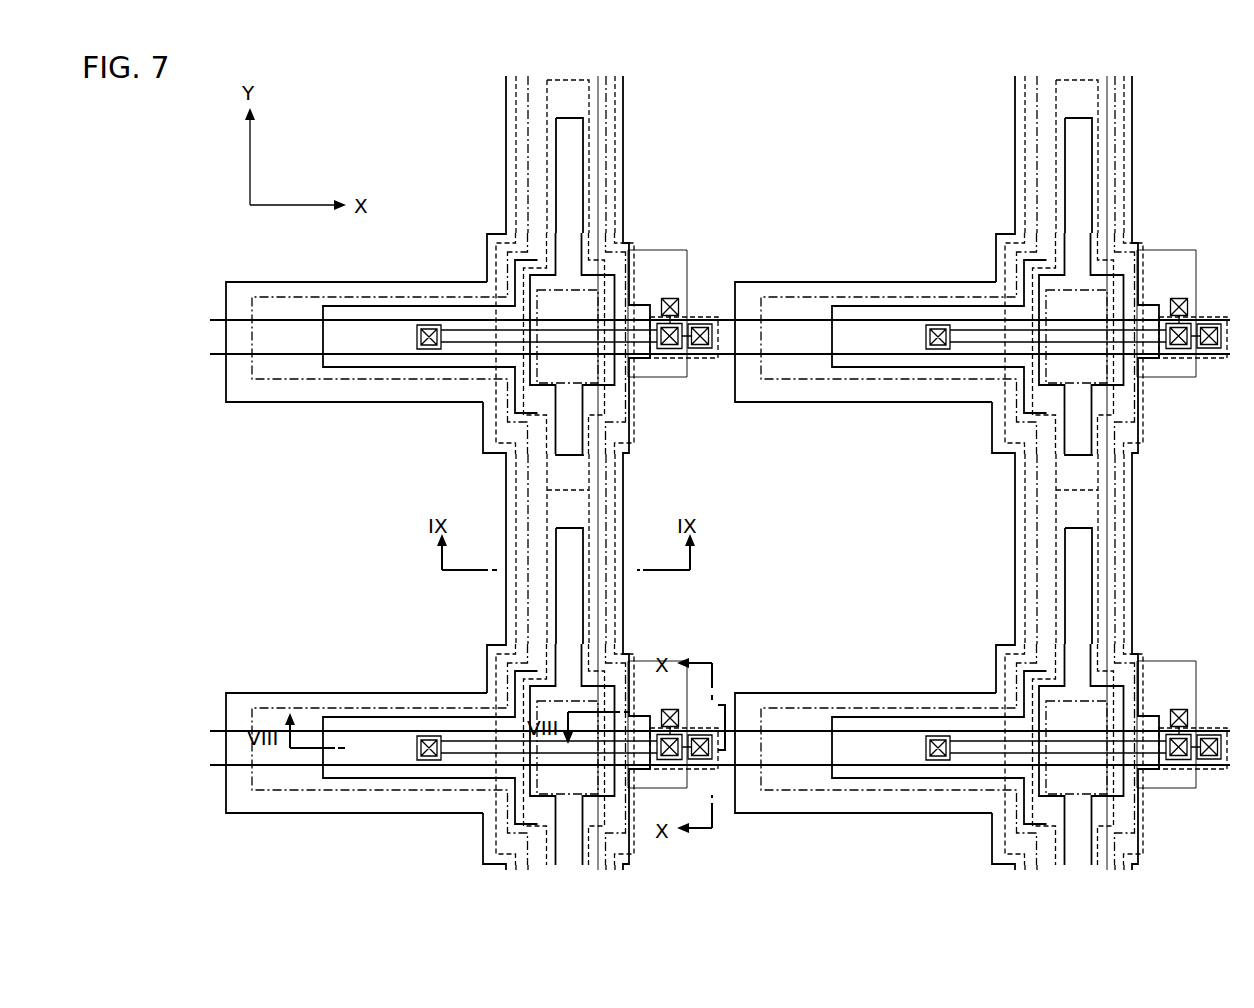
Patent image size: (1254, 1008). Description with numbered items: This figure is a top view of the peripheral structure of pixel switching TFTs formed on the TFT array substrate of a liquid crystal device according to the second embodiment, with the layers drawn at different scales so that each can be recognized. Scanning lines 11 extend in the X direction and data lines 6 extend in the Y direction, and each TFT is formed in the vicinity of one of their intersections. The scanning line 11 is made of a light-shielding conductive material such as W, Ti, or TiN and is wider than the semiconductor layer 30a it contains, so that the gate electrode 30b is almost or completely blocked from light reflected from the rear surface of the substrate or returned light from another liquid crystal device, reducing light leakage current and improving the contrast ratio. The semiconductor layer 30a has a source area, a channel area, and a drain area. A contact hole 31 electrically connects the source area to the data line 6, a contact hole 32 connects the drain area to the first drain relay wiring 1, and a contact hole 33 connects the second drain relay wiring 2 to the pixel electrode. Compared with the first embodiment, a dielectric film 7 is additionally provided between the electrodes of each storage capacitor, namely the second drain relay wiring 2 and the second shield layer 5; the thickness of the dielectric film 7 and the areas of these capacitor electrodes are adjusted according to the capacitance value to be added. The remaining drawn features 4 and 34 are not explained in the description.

The first drain relay wiring 1 is at (710, 316).
The second drain relay wiring 2 is at (589, 152).
The data line 4 is at (302, 282).
The second shield layer 5 is at (506, 126).
The data line 6 is at (598, 110).
The dielectric film 7 is at (516, 170).
The scanning line 11 is at (285, 356).
The semiconductor layer 30a is at (480, 346).
The gate electrode 30b is at (595, 398).
The contact hole 31 is at (430, 324).
The contact hole 32 is at (669, 350).
The contact hole 33 is at (704, 347).
The contact hole 34 is at (670, 298).